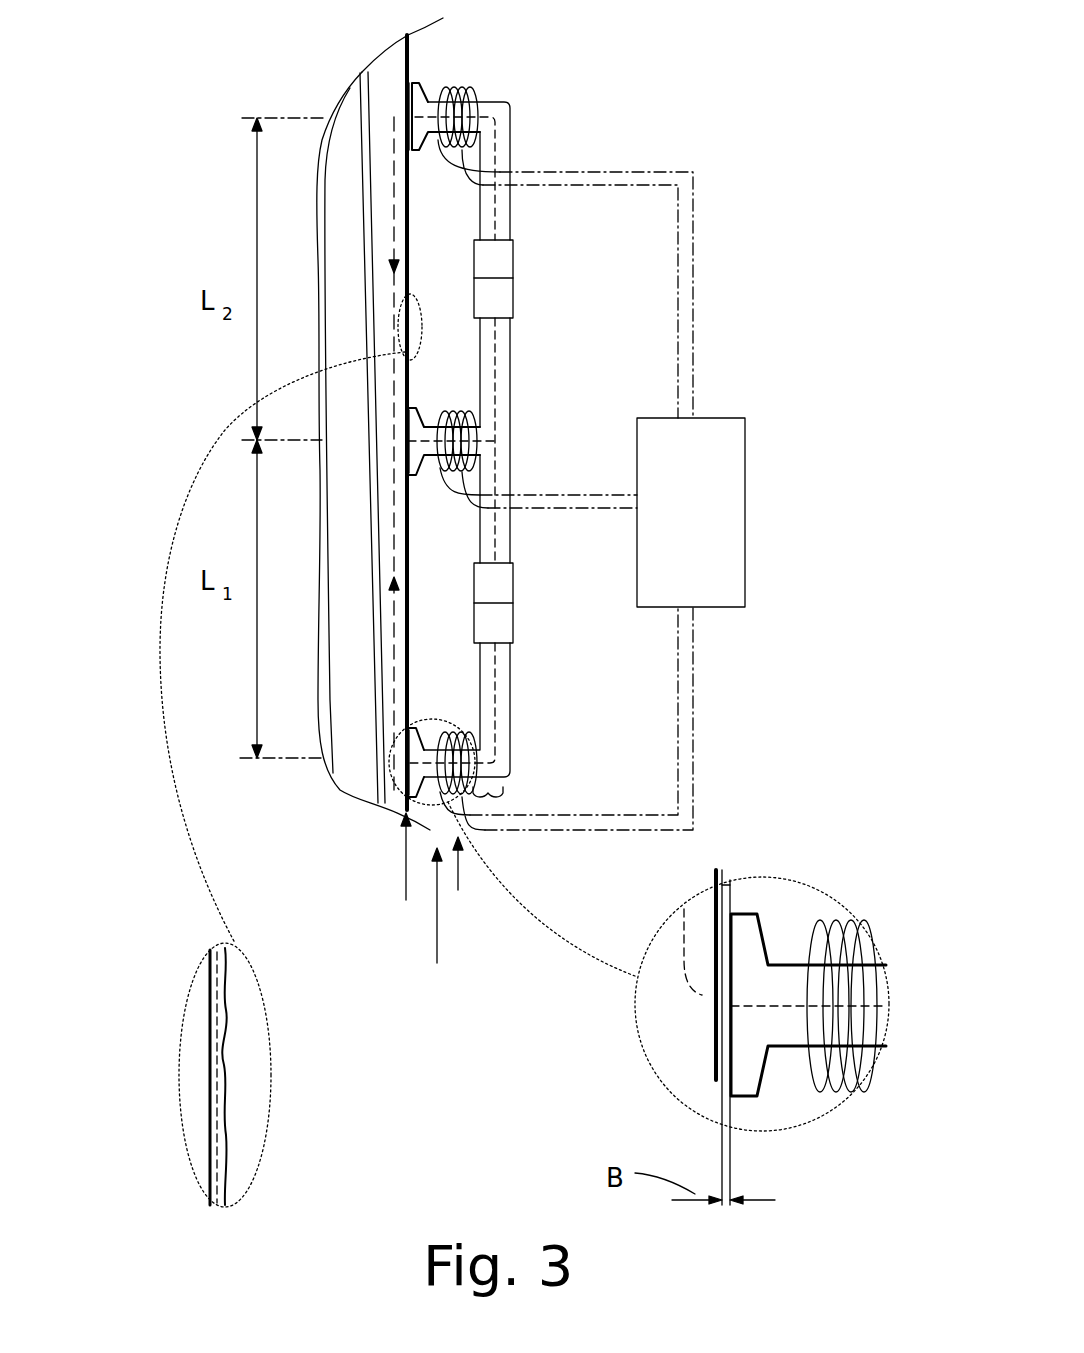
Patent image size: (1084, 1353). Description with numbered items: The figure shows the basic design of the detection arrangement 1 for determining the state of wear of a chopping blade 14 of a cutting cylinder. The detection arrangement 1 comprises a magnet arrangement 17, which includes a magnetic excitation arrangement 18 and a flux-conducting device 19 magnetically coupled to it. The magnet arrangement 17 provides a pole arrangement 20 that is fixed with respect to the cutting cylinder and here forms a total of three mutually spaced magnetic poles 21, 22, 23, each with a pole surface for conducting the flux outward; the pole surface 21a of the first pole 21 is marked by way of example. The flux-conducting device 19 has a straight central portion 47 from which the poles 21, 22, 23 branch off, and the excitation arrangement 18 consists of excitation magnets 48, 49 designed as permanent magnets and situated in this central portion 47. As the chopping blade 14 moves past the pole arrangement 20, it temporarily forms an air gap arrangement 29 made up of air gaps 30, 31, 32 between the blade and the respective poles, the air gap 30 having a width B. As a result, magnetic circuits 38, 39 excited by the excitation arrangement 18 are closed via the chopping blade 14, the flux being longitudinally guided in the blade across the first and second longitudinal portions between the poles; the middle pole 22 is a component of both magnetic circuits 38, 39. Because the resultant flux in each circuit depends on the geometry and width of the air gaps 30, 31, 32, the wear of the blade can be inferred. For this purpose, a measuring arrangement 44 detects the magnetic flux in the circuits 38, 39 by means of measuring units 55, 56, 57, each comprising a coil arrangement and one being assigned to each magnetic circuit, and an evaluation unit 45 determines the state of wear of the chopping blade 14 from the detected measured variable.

The detection arrangement 1 is at (289, 90).
The chopping blade 14 is at (400, 675).
The magnet arrangement 17 is at (530, 760).
The magnetic excitation arrangement 18 is at (513, 597).
The flux-conducting device 19 is at (512, 131).
The pole arrangement 20 is at (438, 925).
The magnetic pole 21 is at (424, 728).
The pole surface 21a is at (721, 942).
The magnetic pole 22 is at (422, 408).
The magnetic pole 23 is at (424, 92).
The air gap arrangement 29 is at (409, 874).
The air gap 30 is at (409, 712).
The air gap 31 is at (412, 485).
The air gap 32 is at (412, 161).
The magnetic circuit 38 is at (495, 702).
The magnetic circuit 39 is at (493, 385).
The measuring arrangement 44 is at (463, 880).
The evaluation unit 45 is at (713, 528).
The central portion 47 is at (488, 797).
The excitation magnet 48 is at (513, 623).
The excitation magnet 49 is at (515, 305).
The measuring unit 55 is at (383, 803).
The measuring unit 56 is at (445, 447).
The measuring unit 57 is at (412, 118).